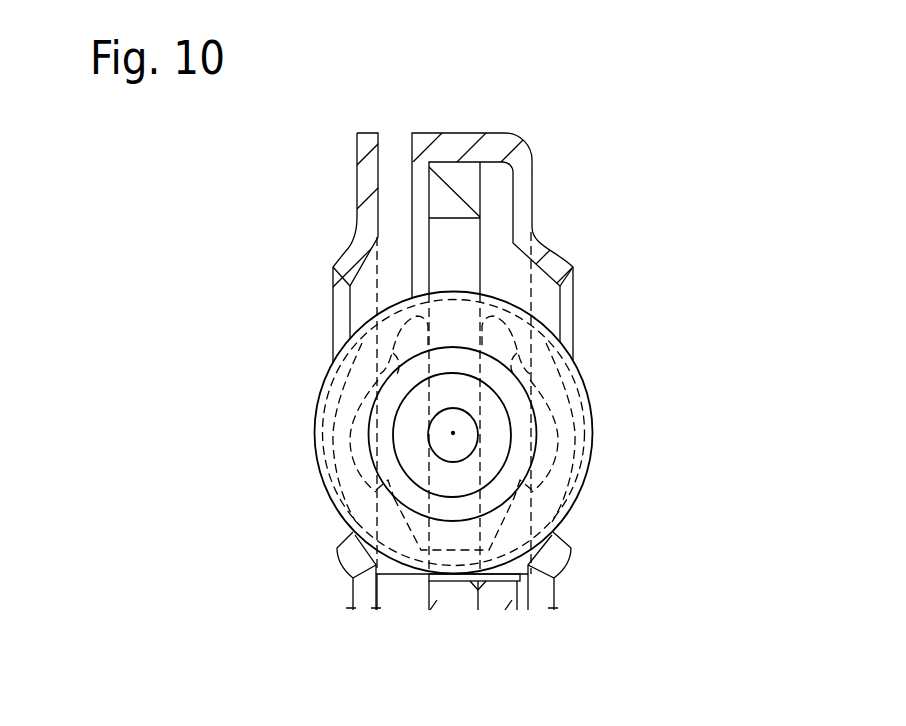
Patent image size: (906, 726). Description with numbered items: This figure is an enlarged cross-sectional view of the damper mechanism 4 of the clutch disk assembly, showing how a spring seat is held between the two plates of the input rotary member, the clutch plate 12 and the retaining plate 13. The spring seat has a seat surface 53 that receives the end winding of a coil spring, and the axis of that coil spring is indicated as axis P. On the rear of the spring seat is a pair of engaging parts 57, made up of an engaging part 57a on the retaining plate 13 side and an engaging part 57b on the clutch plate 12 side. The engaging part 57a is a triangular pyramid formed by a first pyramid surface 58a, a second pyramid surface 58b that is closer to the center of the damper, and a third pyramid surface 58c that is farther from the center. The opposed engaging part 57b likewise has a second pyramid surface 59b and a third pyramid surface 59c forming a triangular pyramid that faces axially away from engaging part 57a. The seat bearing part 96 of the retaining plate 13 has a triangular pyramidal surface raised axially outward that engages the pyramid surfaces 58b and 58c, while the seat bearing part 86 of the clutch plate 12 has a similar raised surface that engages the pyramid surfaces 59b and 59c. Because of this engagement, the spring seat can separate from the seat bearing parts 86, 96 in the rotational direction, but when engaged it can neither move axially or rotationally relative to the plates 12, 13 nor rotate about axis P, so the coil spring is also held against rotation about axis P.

The damper mechanism 4 is at (602, 155).
The clutch plate 12 is at (362, 145).
The retaining plate 13 is at (483, 140).
The seat surface 53 is at (577, 467).
The pair of engaging parts 57 is at (183, 465).
The engaging part 57a is at (510, 402).
The engaging part 57b is at (385, 440).
The axis of the coil spring P is at (453, 433).
The first pyramid surface 58a is at (470, 590).
The second pyramid surface 58b is at (560, 513).
The third pyramid surface 58c is at (547, 363).
The second pyramid surface 59b is at (355, 500).
The third pyramid surface 59c is at (385, 378).
The seat bearing part 86 is at (350, 467).
The seat bearing part 96 is at (573, 483).